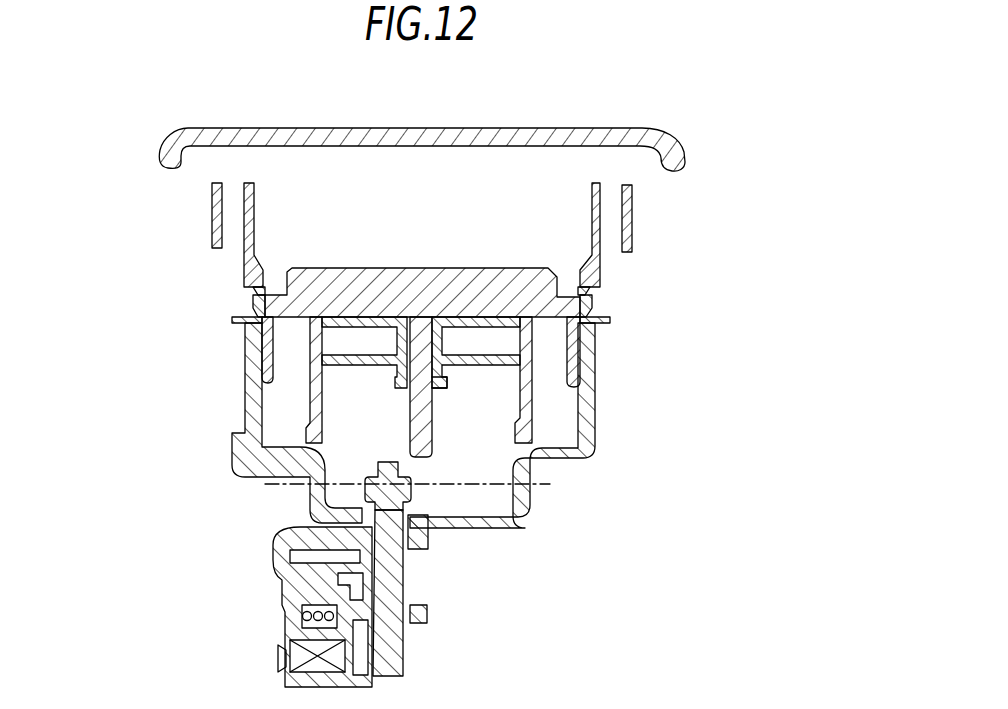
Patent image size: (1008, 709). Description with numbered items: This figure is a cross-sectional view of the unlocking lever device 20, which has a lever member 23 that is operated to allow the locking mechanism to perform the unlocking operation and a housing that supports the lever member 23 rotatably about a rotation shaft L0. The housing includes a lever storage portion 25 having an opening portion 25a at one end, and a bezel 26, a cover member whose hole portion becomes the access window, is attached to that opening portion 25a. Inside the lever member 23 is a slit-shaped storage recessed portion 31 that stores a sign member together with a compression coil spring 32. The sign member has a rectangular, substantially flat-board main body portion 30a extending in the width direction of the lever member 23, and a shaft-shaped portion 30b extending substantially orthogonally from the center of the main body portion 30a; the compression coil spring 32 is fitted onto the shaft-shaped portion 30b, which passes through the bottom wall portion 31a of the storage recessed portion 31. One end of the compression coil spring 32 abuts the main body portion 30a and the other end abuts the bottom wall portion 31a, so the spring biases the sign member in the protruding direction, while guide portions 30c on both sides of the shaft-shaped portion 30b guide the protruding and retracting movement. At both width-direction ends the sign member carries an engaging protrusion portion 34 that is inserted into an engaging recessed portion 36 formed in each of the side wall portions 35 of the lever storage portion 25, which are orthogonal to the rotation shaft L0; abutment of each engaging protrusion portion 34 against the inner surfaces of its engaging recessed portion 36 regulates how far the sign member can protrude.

The unlocking lever device 20 is at (120, 168).
The lever member 23 is at (406, 572).
The lever storage portion 25 is at (582, 453).
The opening portion 25a is at (598, 186).
The bezel 26 is at (600, 127).
The main body portion 30a is at (312, 268).
The shaft-shaped portion 30b is at (428, 450).
The guide portions 30c is at (255, 365).
The storage recessed portion 31 is at (480, 325).
The bottom wall portion 31a is at (445, 390).
The compression coil spring 32 is at (395, 370).
The engaging protrusion portion 34 is at (252, 297).
The side wall portions 35 is at (250, 213).
The engaging recessed portion 36 is at (258, 300).
The rotation shaft L0 is at (542, 487).